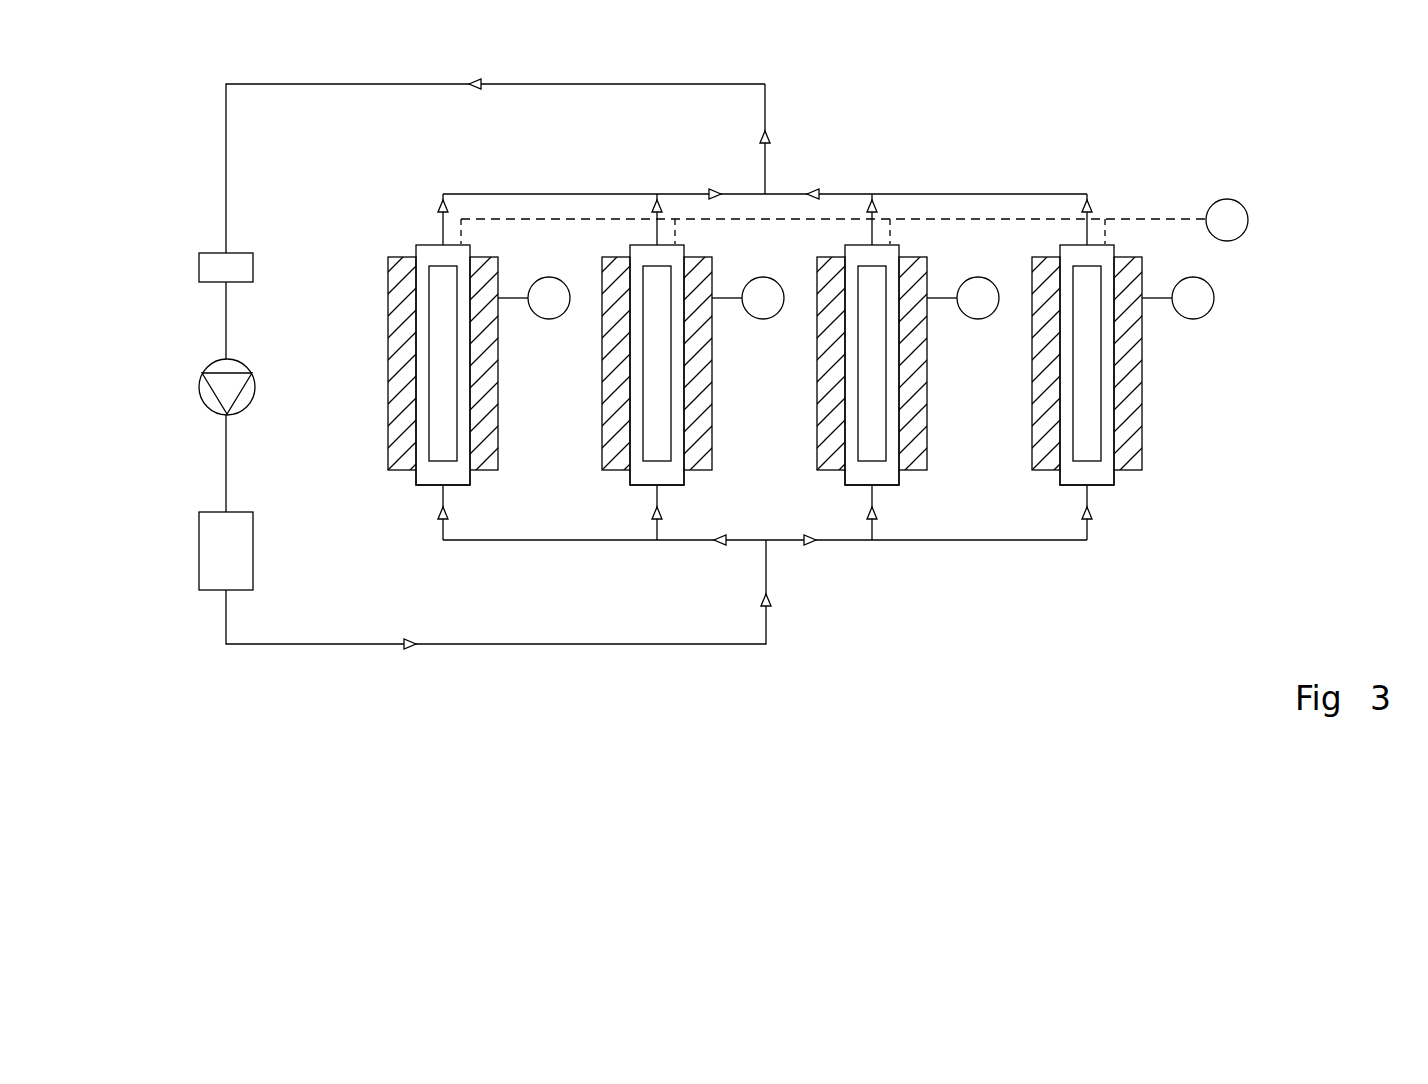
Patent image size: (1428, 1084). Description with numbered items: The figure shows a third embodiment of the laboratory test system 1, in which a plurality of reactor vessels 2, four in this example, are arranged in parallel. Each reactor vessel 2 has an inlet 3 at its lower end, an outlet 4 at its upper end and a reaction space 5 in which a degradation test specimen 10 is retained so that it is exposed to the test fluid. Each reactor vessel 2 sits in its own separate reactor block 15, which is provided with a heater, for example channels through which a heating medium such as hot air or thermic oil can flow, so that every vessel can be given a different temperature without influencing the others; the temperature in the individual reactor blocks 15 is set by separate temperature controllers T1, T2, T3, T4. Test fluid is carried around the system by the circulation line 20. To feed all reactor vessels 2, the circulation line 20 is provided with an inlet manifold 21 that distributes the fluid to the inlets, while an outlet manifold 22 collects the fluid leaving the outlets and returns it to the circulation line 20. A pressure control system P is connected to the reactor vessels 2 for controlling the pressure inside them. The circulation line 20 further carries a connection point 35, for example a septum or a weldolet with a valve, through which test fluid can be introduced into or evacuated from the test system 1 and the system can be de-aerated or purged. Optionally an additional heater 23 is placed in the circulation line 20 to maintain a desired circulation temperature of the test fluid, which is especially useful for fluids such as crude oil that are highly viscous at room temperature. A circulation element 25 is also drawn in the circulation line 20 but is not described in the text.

The test system 1 is at (963, 83).
The reactor vessel 2 is at (470, 243).
The inlet 3 is at (438, 488).
The outlet 4 is at (430, 243).
The reaction space 5 is at (427, 476).
The degradation test specimen 10 is at (443, 440).
The reactor block 15 is at (393, 393).
The circulation line 20 is at (482, 645).
The inlet manifold 21 is at (783, 545).
The outlet manifold 22 is at (842, 185).
The additional heater 23 is at (237, 547).
The pump 25 is at (238, 358).
The connection point 35 is at (237, 262).
The temperature controller T1 is at (534, 298).
The temperature controller T2 is at (748, 298).
The temperature controller T3 is at (963, 298).
The temperature controller T4 is at (1178, 298).
The pressure control system P is at (854, 221).